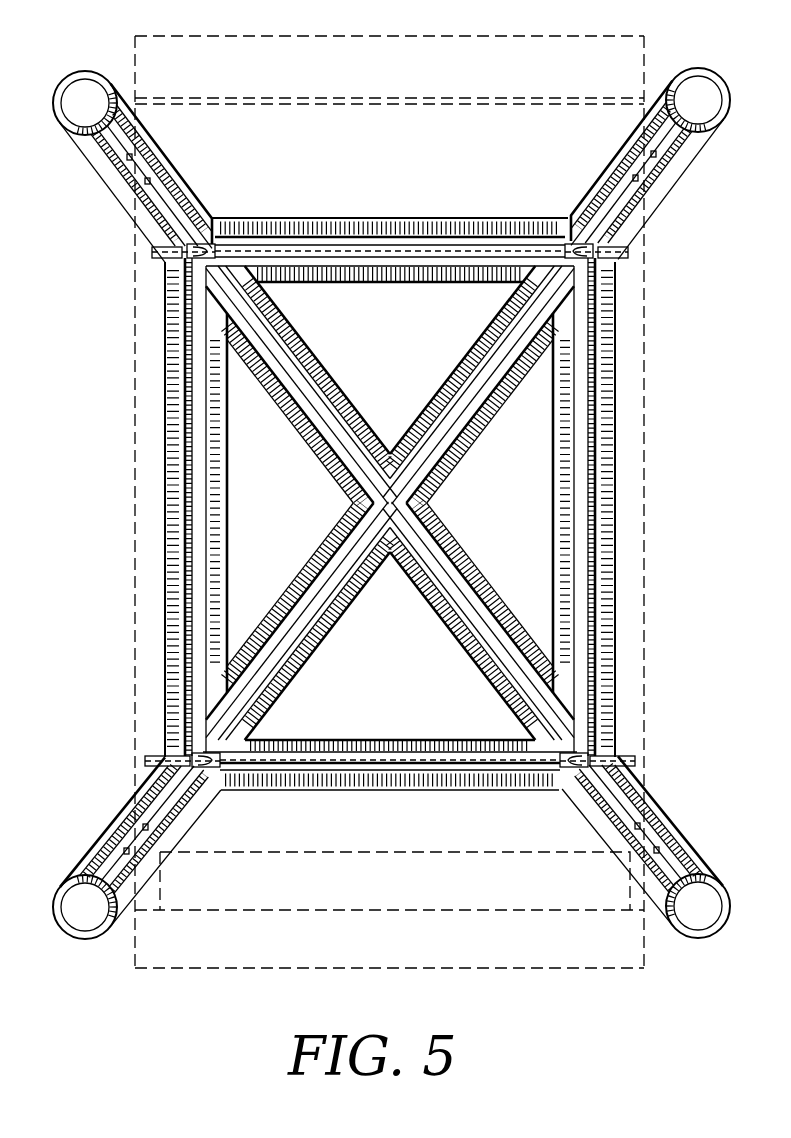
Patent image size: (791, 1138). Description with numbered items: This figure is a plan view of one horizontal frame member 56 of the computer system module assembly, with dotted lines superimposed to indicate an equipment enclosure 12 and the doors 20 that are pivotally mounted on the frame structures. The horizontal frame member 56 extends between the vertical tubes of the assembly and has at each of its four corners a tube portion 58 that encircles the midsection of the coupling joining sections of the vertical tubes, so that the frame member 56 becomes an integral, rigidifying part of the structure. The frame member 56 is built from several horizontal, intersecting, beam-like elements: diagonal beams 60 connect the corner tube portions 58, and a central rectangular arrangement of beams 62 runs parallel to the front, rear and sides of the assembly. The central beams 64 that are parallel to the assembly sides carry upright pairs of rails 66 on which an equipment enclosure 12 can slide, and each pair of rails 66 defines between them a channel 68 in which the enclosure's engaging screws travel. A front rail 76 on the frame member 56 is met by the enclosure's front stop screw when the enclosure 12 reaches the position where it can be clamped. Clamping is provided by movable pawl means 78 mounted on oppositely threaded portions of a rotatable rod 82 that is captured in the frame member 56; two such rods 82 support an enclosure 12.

The equipment enclosure 12 is at (648, 438).
The door 20 is at (480, 35).
The horizontal frame member 56 is at (628, 503).
The tube portion 58 is at (82, 72).
The diagonal beam 60 is at (162, 152).
The central rectangular arrangement of beams 62 is at (410, 283).
The central beam 64 is at (232, 498).
The rail 66 is at (185, 452).
The channel 68 is at (197, 490).
The front rail 76 is at (428, 235).
The pawl means 78 is at (215, 243).
The rotatable rod 82 is at (478, 258).